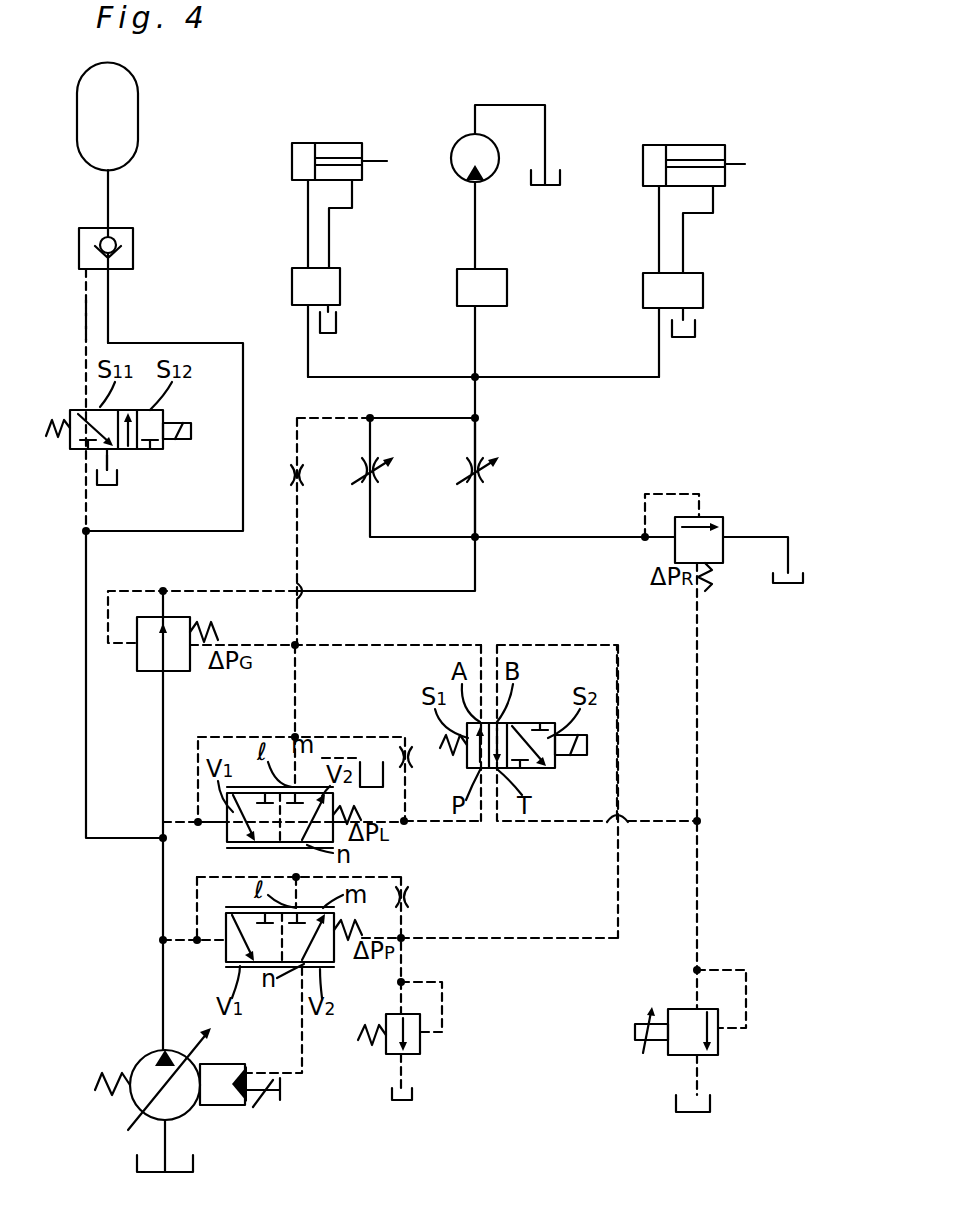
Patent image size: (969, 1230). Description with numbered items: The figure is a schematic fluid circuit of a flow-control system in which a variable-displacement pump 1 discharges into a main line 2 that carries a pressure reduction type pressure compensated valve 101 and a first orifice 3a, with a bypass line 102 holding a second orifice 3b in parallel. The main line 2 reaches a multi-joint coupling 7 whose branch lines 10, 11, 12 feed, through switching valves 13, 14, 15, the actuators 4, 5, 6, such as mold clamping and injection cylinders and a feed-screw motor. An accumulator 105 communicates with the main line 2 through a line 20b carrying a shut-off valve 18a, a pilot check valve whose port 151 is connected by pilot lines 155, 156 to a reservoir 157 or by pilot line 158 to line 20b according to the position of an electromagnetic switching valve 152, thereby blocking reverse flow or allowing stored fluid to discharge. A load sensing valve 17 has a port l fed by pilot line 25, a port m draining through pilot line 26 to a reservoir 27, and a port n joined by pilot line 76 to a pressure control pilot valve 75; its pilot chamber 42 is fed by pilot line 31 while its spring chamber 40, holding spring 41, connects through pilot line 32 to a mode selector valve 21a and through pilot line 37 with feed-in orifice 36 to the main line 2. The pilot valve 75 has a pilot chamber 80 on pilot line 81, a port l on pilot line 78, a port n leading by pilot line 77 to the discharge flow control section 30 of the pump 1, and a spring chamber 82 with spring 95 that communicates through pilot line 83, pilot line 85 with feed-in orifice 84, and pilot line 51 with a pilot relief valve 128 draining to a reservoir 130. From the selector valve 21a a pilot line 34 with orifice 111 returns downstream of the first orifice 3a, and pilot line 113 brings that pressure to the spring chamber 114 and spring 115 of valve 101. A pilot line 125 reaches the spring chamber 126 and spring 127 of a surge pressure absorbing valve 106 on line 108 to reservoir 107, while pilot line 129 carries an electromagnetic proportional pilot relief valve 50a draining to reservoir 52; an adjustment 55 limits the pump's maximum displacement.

The variable-displacement pump 1 is at (135, 1051).
The main line 2 is at (480, 399).
The first orifice 3a is at (488, 456).
The second orifice 3b is at (352, 462).
The actuator 4 is at (290, 140).
The actuator 5 is at (455, 138).
The actuator 6 is at (640, 142).
The multi-joint coupling 7 is at (490, 373).
The branch line 10 is at (306, 333).
The branch line 11 is at (474, 331).
The branch line 12 is at (658, 333).
The switching valve 13 is at (295, 272).
The switching valve 14 is at (458, 276).
The switching valve 15 is at (646, 278).
The load sensing valve 17 is at (243, 780).
The shut-off valve 18a is at (122, 228).
The line 20b is at (205, 340).
The mode selector valve 21a is at (548, 716).
The pilot line 25 is at (258, 737).
The pilot line 26 is at (352, 762).
The reservoir 27 is at (380, 762).
The discharge flow control section 30 is at (222, 1107).
The pilot line 31 is at (198, 808).
The pilot line 32 is at (452, 823).
The pilot line 34 is at (297, 416).
The feed-in orifice 36 is at (412, 762).
The pilot line 37 is at (325, 760).
The spring chamber 40 is at (340, 837).
The spring 41 is at (356, 811).
The pilot chamber 42 is at (225, 825).
The electromagnetic proportional pilot relief valve 50a is at (724, 1046).
The pilot line 51 is at (405, 976).
The reservoir 52 is at (710, 1109).
The adjustment 55 is at (270, 1105).
The pressure control pilot valve 75 is at (240, 850).
The pilot line 76 is at (302, 850).
The pilot line 77 is at (300, 1054).
The pilot line 78 is at (196, 886).
The pilot chamber 80 is at (226, 949).
The pilot line 81 is at (168, 939).
The spring chamber 82 is at (364, 968).
The pilot line 83 is at (508, 940).
The feed-in orifice 84 is at (410, 898).
The pilot line 85 is at (403, 877).
The spring 95 is at (355, 929).
The pressure reduction type pressure compensated valve 101 is at (135, 655).
The bypass line 102 is at (370, 505).
The accumulator 105 is at (128, 124).
The surge pressure absorbing valve 106 is at (722, 505).
The reservoir 107 is at (785, 585).
The line 108 is at (598, 535).
The orifice 111 is at (292, 490).
The pilot line 113 is at (265, 646).
The spring chamber 114 is at (195, 648).
The spring 115 is at (208, 623).
The pilot line 125 is at (698, 737).
The spring chamber 126 is at (698, 568).
The spring 127 is at (714, 578).
The pilot relief valve 128 is at (698, 515).
The pilot line 129 is at (698, 891).
The reservoir 130 is at (412, 1096).
The port 151 is at (84, 268).
The electromagnetic switching valve 152 is at (74, 405).
The pilot line 155 is at (85, 325).
The pilot line 156 is at (108, 462).
The reservoir 157 is at (117, 483).
The pilot line 158 is at (86, 518).